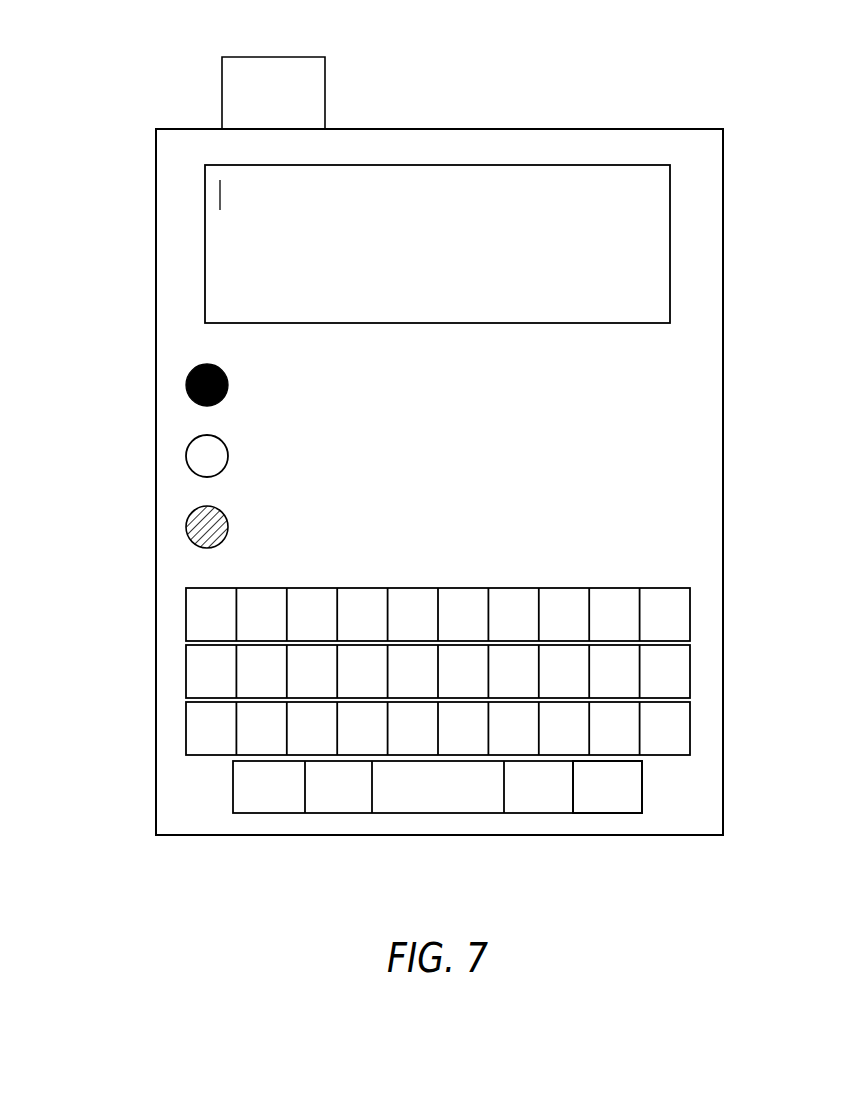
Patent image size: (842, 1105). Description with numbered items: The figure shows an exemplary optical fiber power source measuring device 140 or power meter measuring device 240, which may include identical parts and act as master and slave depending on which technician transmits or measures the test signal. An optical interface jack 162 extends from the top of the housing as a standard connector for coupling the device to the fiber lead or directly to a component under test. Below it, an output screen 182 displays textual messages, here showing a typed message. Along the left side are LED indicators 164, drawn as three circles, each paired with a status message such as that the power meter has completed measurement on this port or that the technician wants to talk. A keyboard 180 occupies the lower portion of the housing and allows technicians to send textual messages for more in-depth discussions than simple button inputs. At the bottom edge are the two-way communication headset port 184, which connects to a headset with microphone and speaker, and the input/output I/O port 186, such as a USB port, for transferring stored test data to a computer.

The power source measuring device 140 is at (407, 541).
The power meter measuring device 240 is at (178, 878).
The optical interface jack 162 is at (302, 57).
The output screen 182 is at (205, 213).
The LED indicators 164 is at (186, 386).
The two-way communication headset port 184 is at (310, 844).
The input/output I/O port 186 is at (523, 844).
The keyboard 180 is at (617, 813).